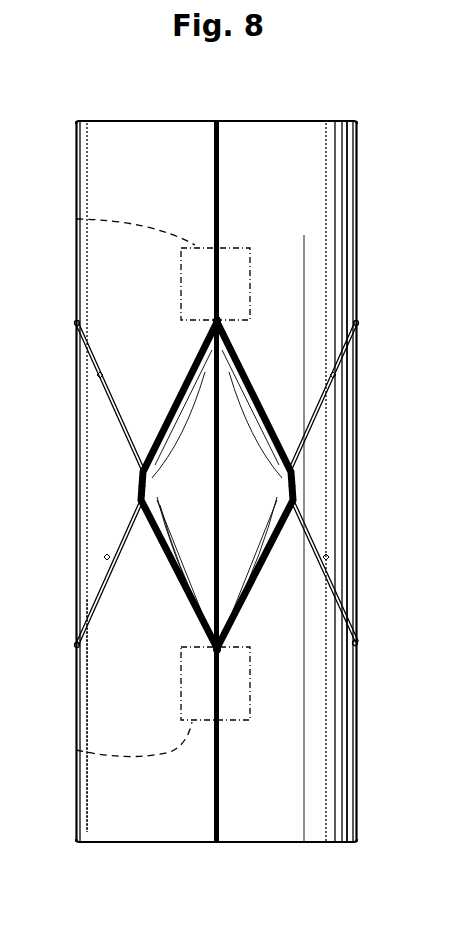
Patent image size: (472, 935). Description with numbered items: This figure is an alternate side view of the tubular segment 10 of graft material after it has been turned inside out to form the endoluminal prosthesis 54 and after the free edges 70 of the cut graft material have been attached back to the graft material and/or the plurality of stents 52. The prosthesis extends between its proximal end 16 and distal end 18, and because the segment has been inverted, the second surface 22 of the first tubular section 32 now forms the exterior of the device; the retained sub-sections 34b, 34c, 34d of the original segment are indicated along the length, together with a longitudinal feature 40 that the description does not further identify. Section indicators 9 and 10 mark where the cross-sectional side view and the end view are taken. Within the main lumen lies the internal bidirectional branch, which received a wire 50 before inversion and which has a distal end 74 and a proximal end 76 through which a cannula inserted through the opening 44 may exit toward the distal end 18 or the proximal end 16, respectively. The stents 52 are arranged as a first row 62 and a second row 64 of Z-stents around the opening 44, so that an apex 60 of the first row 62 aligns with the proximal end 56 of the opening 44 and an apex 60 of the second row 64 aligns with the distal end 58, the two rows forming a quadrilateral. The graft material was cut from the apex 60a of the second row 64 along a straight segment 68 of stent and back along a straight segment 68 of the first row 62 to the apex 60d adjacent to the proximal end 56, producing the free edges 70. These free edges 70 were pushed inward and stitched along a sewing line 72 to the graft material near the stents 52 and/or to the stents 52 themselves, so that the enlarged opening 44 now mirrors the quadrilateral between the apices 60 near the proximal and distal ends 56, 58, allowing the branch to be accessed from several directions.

The section line 9- 9 is at (276, 76).
The tubular segment 10 is at (76, 125).
The proximal end 16 is at (292, 842).
The distal end 18 is at (293, 121).
The second surface 22 is at (94, 282).
The first tubular section 32 is at (95, 795).
The sub-section 34b is at (247, 703).
The sub-section 34c is at (252, 628).
The sub-section 34d is at (260, 273).
The longitudinal seam 40 is at (220, 183).
The opening 44 is at (170, 570).
The wire 50 is at (222, 493).
The plurality of stents 52 is at (353, 355).
The endoluminal prosthesis 54 is at (364, 249).
The proximal end of the opening 56 is at (219, 650).
The distal end of the opening 58 is at (219, 320).
The apex 60 is at (137, 476).
The apex of the second row of Z-stents 60a is at (323, 304).
The apex of the first row of Z-stents 60d is at (325, 671).
The first row of Z-stents 62 is at (85, 603).
The second row of Z-stents 64 is at (82, 370).
The straight segment 68 is at (97, 395).
The free edges 70 is at (167, 412).
The sewing line 72 is at (137, 482).
The distal end of the internal bidirectional branch 74 is at (76, 220).
The proximal end of the internal bidirectional branch 76 is at (76, 750).